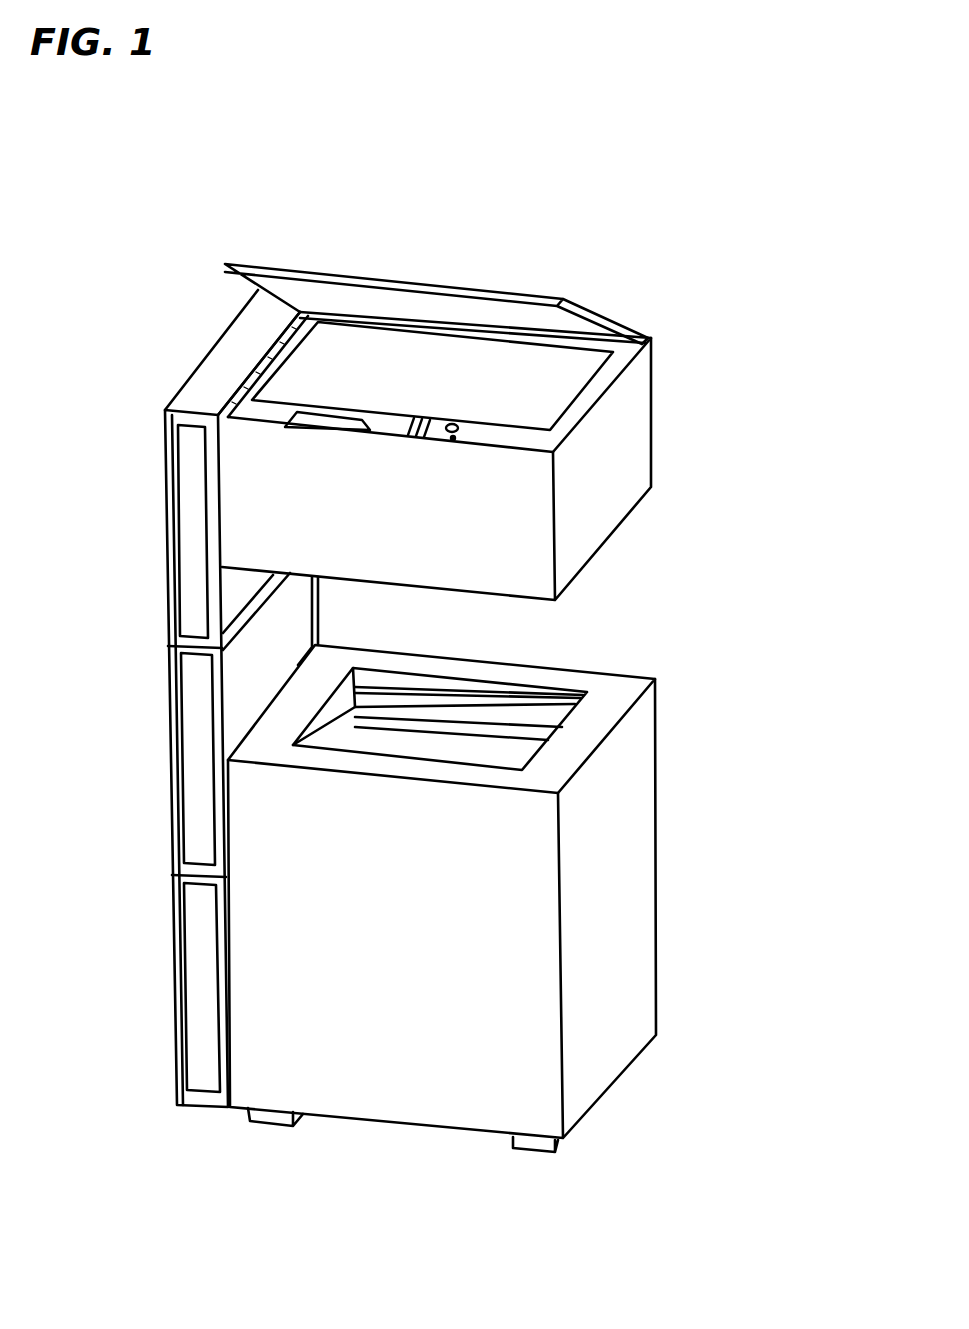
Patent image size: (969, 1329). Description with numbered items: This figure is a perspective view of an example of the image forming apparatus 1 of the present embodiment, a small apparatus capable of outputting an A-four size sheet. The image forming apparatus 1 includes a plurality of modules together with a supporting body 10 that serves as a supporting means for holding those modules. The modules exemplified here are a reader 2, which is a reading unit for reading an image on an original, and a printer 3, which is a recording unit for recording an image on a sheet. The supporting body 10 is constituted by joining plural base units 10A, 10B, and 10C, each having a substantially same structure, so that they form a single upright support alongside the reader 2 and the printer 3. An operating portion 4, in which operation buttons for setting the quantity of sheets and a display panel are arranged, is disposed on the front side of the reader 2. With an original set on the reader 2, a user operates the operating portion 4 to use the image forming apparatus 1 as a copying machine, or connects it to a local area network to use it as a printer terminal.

The image forming apparatus 1 is at (599, 309).
The reader 2 is at (630, 442).
The printer 3 is at (637, 883).
The operating portion 4 is at (433, 442).
The supporting body 10 is at (182, 365).
The base unit 10A is at (160, 569).
The base unit 10B is at (158, 771).
The base unit 10C is at (160, 977).